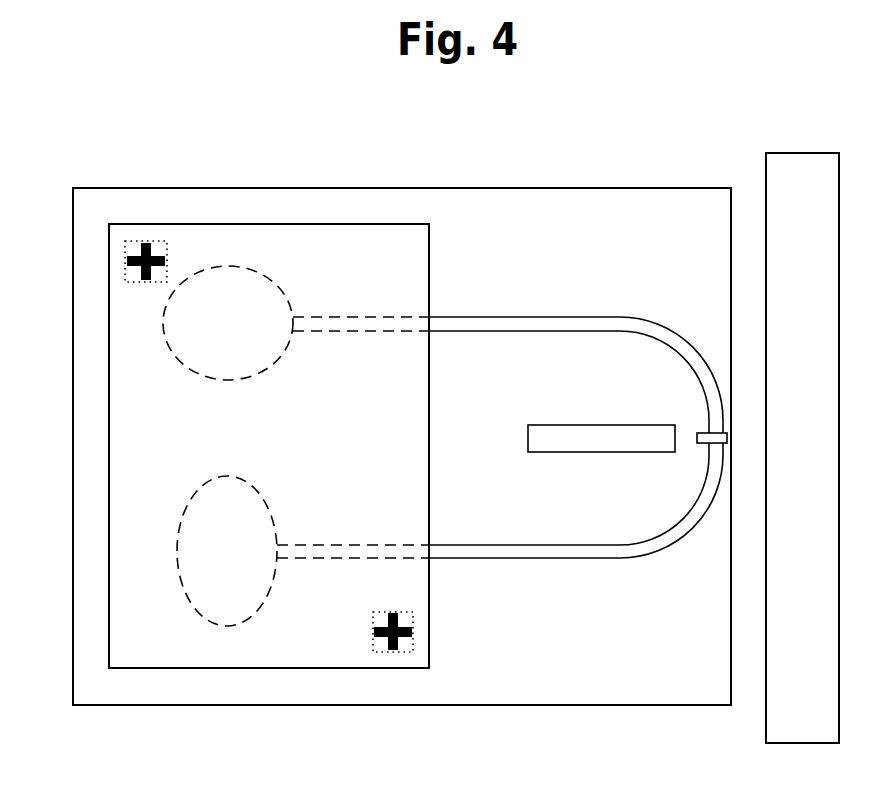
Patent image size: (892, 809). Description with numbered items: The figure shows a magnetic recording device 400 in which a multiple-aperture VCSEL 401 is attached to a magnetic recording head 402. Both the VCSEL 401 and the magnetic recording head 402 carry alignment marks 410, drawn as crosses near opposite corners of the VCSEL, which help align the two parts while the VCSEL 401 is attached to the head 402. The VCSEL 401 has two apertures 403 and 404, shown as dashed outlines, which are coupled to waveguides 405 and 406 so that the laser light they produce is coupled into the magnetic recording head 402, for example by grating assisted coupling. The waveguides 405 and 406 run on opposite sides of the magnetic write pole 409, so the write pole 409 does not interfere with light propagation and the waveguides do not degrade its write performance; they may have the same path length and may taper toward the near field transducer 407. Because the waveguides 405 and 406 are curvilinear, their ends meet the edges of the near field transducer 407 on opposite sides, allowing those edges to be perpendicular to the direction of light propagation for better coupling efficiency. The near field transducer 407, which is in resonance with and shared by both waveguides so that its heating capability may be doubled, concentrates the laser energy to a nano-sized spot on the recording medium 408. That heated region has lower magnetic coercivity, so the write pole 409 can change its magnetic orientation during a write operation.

The magnetic recording device 400 is at (82, 90).
The multiple-aperture VCSEL 401 is at (349, 451).
The magnetic recording head 402 is at (402, 470).
The aperture 403 is at (248, 334).
The aperture 404 is at (247, 562).
The waveguide 405 is at (508, 363).
The waveguide 406 is at (500, 530).
The near field transducer 407 is at (643, 461).
The recording medium 408 is at (823, 458).
The magnetic write pole 409 is at (568, 413).
The alignment marks 410 is at (269, 447).